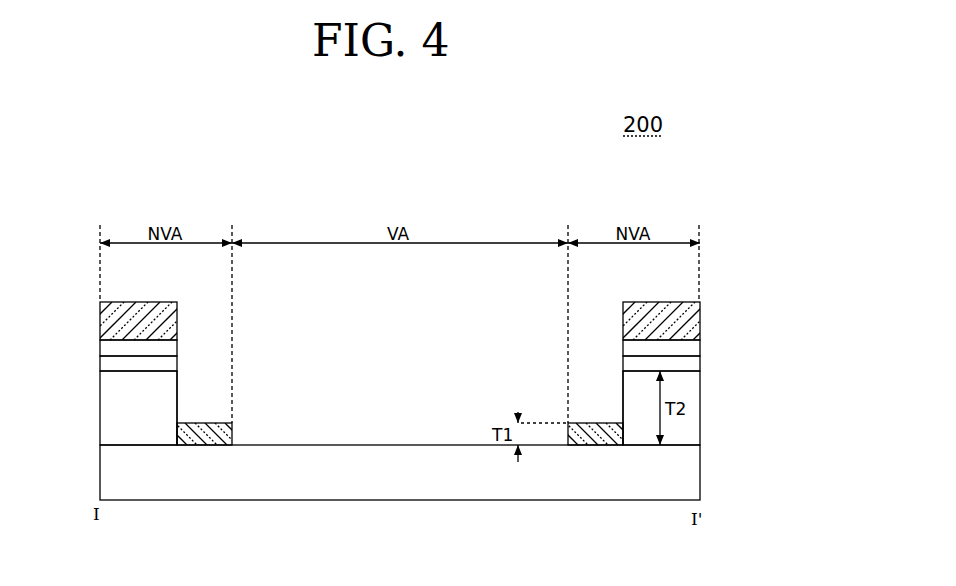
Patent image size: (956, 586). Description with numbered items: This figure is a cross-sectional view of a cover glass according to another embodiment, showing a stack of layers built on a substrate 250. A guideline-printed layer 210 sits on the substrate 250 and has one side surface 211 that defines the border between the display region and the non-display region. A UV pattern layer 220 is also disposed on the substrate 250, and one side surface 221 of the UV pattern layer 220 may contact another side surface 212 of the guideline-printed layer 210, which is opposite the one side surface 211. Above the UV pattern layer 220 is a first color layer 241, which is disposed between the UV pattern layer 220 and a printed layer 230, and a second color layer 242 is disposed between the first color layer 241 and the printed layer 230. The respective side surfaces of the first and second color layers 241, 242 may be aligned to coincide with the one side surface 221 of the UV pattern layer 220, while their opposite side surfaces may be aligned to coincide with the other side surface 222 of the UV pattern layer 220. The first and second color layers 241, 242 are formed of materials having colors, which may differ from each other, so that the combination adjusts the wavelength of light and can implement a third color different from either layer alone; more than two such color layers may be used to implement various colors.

The guideline-printed layer 210 is at (401, 498).
The one side surface of the guideline-printed layer 211 is at (565, 435).
The other side surface of the guideline-printed layer 212 is at (597, 440).
The UV pattern layer 220 is at (438, 461).
The one side surface of the UV pattern layer 221 is at (625, 402).
The other side surface of the UV pattern layer 222 is at (700, 402).
The printed layer 230 is at (700, 320).
The first color layer 241 is at (700, 370).
The second color layer 242 is at (700, 348).
The substrate 250 is at (700, 473).